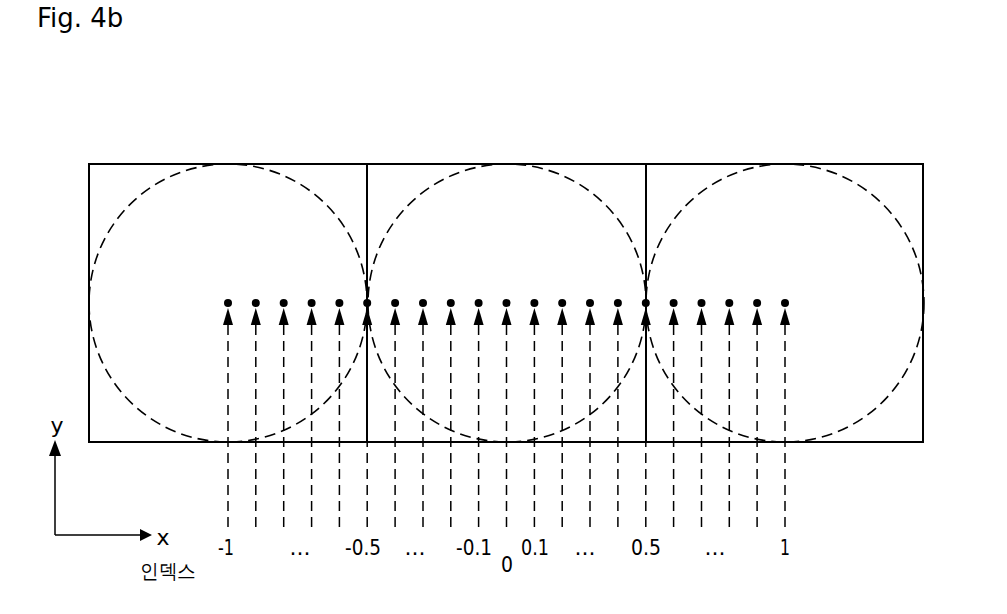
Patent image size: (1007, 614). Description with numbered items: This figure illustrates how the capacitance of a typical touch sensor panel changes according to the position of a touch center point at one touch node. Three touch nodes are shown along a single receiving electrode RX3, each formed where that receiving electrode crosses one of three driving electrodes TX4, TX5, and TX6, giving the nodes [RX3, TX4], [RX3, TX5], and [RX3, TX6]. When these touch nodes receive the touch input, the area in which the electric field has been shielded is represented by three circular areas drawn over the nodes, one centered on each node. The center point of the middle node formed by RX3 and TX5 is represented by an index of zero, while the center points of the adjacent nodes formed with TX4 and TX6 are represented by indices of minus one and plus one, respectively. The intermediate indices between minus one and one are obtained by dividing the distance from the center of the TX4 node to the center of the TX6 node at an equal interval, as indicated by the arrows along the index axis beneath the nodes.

The TX4 driving electrode TX4 is at (228, 285).
The TX5 driving electrode TX5 is at (506, 286).
The TX6 driving electrode TX6 is at (784, 286).
The RX3 receiving electrode RX3 is at (417, 309).